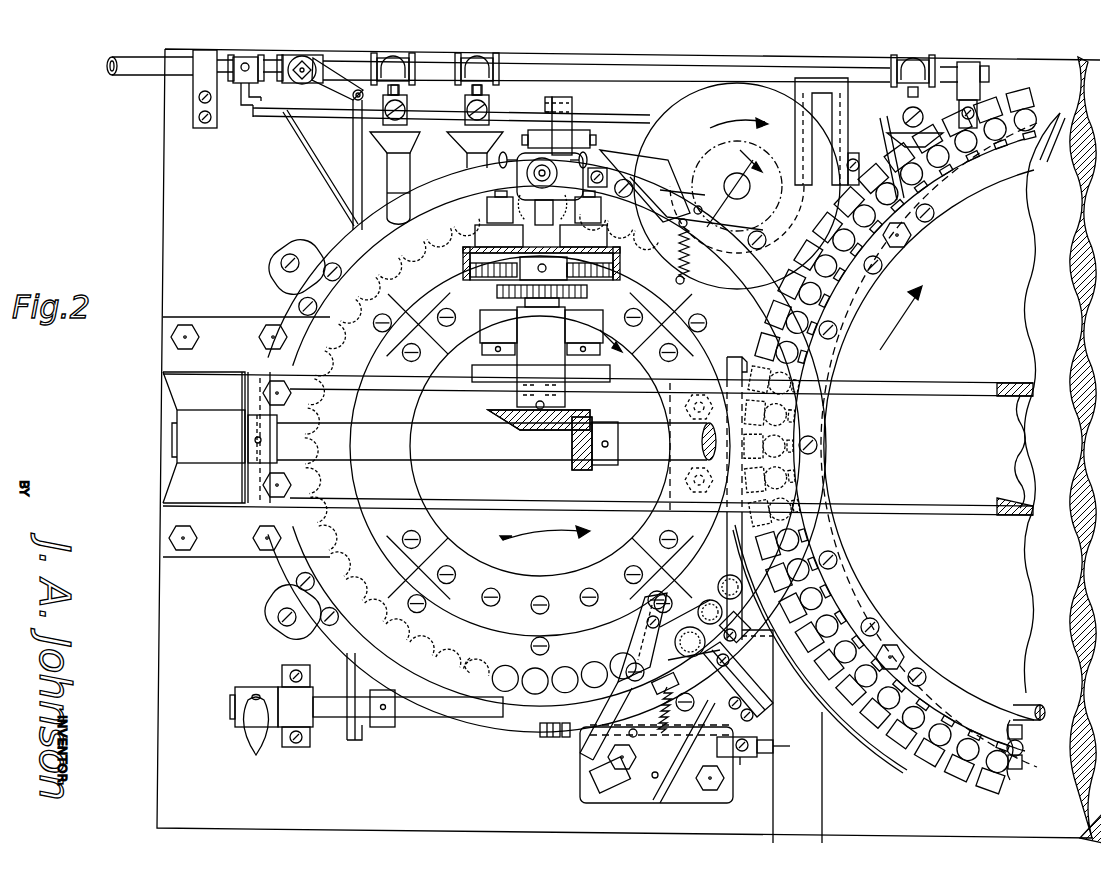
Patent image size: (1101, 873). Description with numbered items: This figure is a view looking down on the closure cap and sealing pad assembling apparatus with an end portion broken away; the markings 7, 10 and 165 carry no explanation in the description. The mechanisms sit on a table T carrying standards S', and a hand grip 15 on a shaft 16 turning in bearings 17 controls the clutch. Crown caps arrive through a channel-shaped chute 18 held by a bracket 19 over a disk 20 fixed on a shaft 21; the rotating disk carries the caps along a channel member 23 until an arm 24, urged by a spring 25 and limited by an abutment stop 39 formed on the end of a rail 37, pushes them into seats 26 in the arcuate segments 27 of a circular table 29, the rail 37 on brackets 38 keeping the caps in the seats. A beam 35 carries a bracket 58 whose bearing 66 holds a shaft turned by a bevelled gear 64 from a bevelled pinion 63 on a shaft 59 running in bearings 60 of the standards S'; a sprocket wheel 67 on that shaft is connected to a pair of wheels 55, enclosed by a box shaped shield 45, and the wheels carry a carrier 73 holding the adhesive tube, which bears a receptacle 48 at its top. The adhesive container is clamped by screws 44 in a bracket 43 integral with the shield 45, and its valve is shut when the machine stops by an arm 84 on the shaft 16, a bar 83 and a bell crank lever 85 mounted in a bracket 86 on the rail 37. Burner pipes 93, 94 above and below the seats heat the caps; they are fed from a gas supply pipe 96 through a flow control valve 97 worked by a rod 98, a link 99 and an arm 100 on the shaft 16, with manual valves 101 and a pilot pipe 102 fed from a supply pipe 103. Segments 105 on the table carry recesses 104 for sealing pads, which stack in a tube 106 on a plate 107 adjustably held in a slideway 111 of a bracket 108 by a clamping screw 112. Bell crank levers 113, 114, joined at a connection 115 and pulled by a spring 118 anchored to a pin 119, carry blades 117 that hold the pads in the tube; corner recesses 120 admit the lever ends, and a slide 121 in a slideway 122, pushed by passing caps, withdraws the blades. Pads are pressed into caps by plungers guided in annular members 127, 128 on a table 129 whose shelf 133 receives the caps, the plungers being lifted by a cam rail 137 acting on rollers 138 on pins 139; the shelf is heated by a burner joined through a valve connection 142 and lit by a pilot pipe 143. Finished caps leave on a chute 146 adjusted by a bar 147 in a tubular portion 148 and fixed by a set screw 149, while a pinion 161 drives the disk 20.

The frame break line 7 is at (1052, 342).
The rotary table direction arrow 10 is at (686, 258).
The hand grips and handles 15 is at (256, 752).
The shaft 16 is at (414, 718).
The bearings 17 is at (302, 730).
The chute 18 is at (840, 112).
The bracket 19 is at (855, 160).
The disk 20 is at (655, 140).
The shaft 21 is at (730, 178).
The channel member 23 is at (740, 190).
The arm 24 is at (684, 218).
The spring 25 is at (684, 225).
The arcuate recesses (closure cap supporting seats) 26 is at (322, 530).
The arcuate segments 27 is at (465, 568).
The circular table 29 is at (545, 527).
The beam 35 is at (965, 512).
The rail 37 is at (345, 240).
The brackets 38 is at (278, 278).
The abutment stop 39 is at (667, 190).
The bracket 43 is at (517, 172).
The clamping screws 44 is at (510, 151).
The box shaped shield 45 is at (463, 261).
The rectangular receptacle 48 is at (606, 171).
The wheels 55 is at (475, 235).
The bracket 58 is at (603, 382).
The shaft 59 is at (430, 452).
The bearings 60 is at (186, 420).
The bevelled pinion 63 is at (582, 470).
The bevelled gear 64 is at (488, 412).
The bearing 66 is at (520, 355).
The sprocket wheel 67 is at (587, 295).
The carrier 73 is at (487, 205).
The bar 83 is at (574, 103).
The arm 84 is at (545, 740).
The bell crank lever 85 is at (550, 100).
The bracket 86 is at (590, 137).
The pipe 93 is at (400, 175).
The pipe 94 is at (470, 172).
The gas supply pipe 96 is at (140, 77).
The flow control valve 97 is at (302, 56).
The rod 98 is at (353, 134).
The link 99 is at (330, 88).
The arm 100 is at (378, 730).
The valves 101 is at (468, 104).
The pipe 102 is at (316, 163).
The supply pipe 103 is at (268, 115).
The arcuate recesses 104 is at (470, 655).
The arcuate segments 105 is at (418, 340).
The tube 106 is at (686, 627).
The plate 107 is at (650, 800).
The bracket 108 is at (700, 800).
The slideway 111 is at (578, 760).
The block 112 is at (608, 790).
The bell crank lever 113 is at (640, 640).
The bell crank lever 114 is at (672, 710).
The connection 115 is at (652, 690).
The blades 117 is at (665, 602).
The spring 118 is at (638, 735).
The pin 119 is at (624, 757).
The recesses 120 is at (738, 640).
The slide 121 is at (740, 660).
The slideway 122 is at (744, 680).
The annular member 127 is at (955, 668).
The annular member 128 is at (1022, 732).
The table 129 is at (1018, 630).
The annular shelf 133 is at (1020, 752).
The cam rail 137 is at (905, 778).
The rollers 138 is at (1040, 112).
The pins 139 is at (995, 115).
The valve connection 142 is at (923, 117).
The pipe 143 is at (884, 113).
The chute 146 is at (812, 790).
The bar 147 is at (768, 752).
The tubular portion 148 is at (720, 750).
The set screw 149 is at (742, 760).
The pinion 161 is at (766, 250).
The direction arrow 165 is at (739, 128).
The standards S' is at (226, 437).
The table T is at (162, 626).